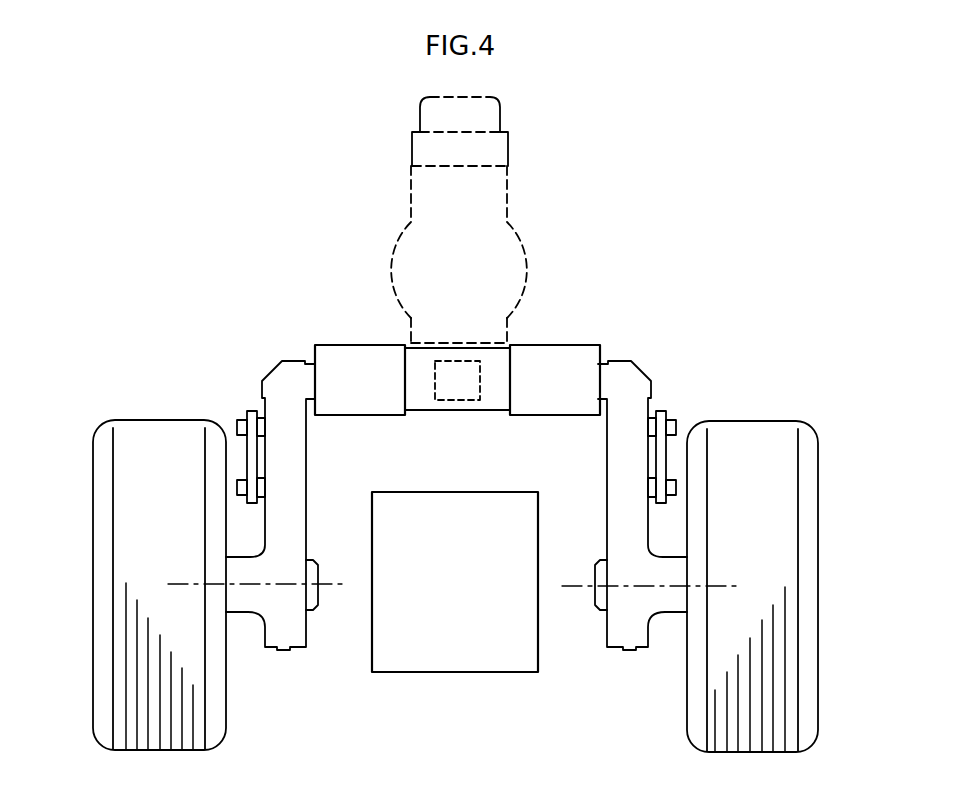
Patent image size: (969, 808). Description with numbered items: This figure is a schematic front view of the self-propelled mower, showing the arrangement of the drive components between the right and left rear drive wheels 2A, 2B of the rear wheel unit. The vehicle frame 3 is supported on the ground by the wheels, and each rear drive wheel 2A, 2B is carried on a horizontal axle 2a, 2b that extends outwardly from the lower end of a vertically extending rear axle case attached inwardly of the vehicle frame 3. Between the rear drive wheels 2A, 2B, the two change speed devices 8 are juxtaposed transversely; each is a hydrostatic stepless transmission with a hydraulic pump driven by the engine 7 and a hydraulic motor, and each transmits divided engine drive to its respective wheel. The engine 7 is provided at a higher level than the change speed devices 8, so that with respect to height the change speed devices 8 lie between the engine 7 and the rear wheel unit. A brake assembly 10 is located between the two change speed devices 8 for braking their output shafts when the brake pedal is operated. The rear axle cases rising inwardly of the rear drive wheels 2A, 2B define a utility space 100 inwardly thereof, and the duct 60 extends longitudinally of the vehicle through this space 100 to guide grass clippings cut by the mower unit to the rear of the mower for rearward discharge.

The engine 7 is at (508, 148).
The change speed device 8 is at (365, 400).
The brake assembly 10 is at (453, 402).
The duct 60 is at (452, 673).
The utility space 100 is at (567, 624).
The vehicle frame 3 is at (247, 412).
The left rear drive wheel 2A is at (158, 430).
The right rear drive wheel 2B is at (753, 440).
The axle 2a is at (238, 588).
The axle 2b is at (672, 590).